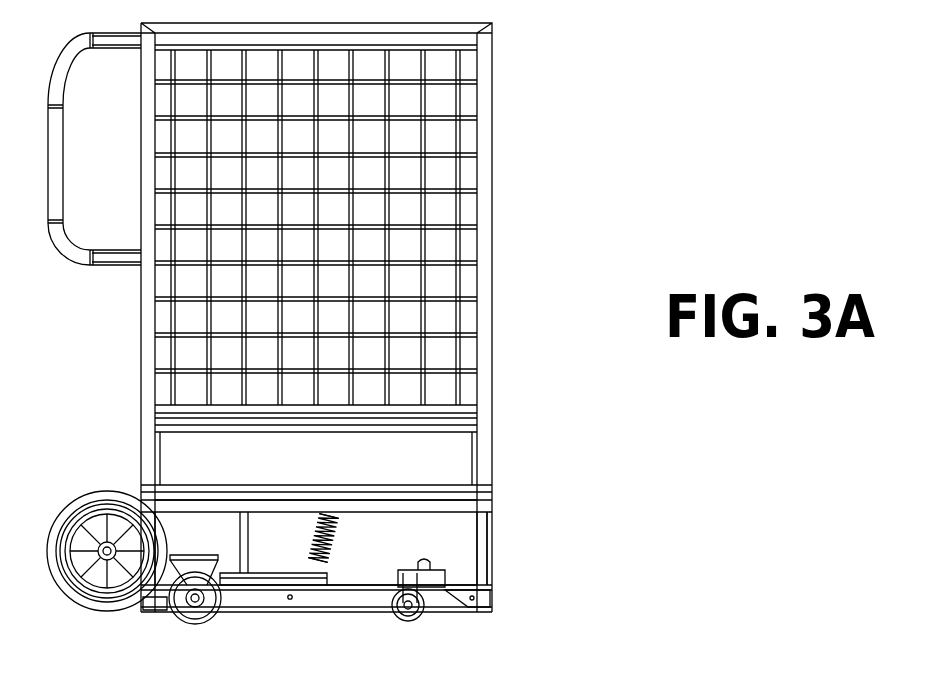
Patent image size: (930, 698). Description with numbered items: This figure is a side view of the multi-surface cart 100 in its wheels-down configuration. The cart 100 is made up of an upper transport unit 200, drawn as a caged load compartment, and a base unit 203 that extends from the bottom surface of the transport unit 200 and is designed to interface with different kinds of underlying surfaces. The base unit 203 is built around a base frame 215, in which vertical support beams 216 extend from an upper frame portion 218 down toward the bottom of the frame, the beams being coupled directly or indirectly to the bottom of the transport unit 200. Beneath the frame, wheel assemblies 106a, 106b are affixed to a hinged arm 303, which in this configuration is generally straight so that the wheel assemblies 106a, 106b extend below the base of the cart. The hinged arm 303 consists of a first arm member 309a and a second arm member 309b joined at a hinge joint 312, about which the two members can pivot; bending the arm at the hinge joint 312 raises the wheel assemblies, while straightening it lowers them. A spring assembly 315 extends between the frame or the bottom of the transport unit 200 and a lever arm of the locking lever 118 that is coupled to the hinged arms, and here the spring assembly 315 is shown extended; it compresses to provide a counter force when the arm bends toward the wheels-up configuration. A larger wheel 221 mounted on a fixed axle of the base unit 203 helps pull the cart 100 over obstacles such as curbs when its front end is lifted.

The cart 100 is at (375, 349).
The transport unit 200 is at (522, 22).
The base unit 203 is at (358, 563).
The wheels 221 is at (100, 502).
The upper frame portion 218 is at (458, 510).
The spring assembly 315 is at (326, 515).
The hinged arm 303 is at (362, 582).
The vertical support beam 216 is at (492, 542).
The base frame 215 is at (492, 597).
The locking lever 118 is at (263, 577).
The hinge joint 312 is at (293, 600).
The first arm member 309a is at (347, 602).
The second arm member 309b is at (250, 595).
The wheel assembly 106a is at (449, 626).
The wheel assembly 106b is at (173, 613).